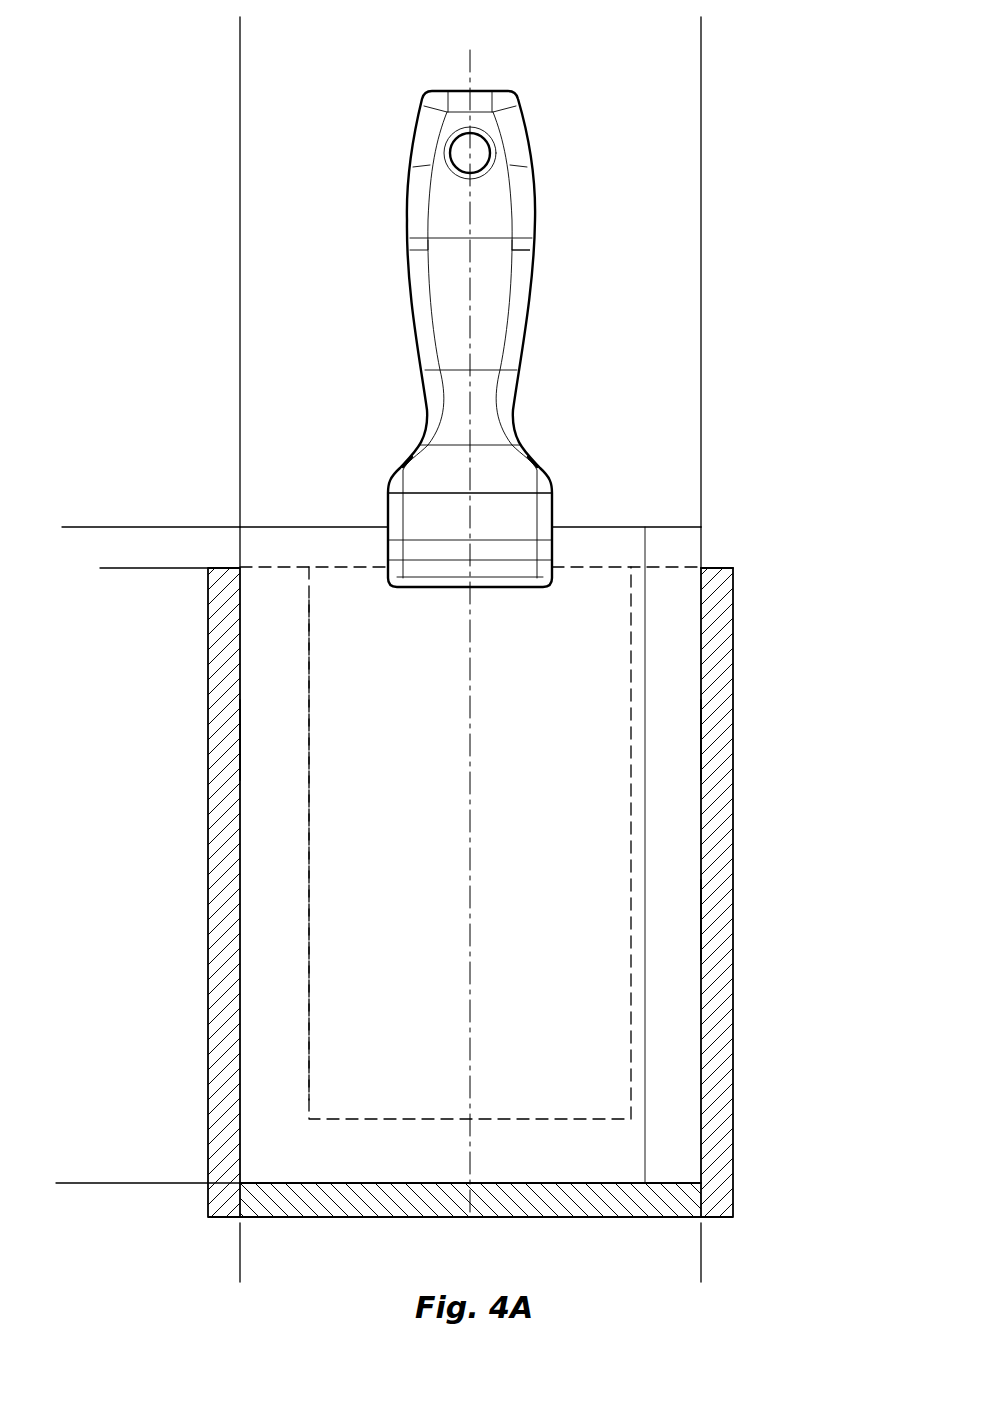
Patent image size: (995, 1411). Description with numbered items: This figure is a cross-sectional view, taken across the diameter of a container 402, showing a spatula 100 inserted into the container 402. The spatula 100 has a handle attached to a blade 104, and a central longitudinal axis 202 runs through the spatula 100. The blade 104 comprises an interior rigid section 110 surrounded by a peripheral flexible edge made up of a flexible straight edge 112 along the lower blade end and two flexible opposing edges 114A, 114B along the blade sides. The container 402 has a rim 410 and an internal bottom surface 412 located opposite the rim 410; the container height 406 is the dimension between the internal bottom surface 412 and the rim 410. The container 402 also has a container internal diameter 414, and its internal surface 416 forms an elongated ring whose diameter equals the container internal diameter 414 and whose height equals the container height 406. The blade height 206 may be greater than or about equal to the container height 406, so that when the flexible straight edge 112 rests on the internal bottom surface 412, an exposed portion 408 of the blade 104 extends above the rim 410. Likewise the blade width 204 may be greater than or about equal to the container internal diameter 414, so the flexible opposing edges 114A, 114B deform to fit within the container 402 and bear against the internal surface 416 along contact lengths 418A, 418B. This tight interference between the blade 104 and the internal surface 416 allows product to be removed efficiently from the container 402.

The spatula 100 is at (778, 160).
The blade 104 is at (603, 503).
The interior rigid section 110 is at (428, 861).
The flexible straight edge 112 is at (428, 1167).
The first flexible opposing edge 114A is at (692, 861).
The second flexible opposing edge 114B is at (305, 861).
The central longitudinal axis 202 is at (470, 77).
The blade width 204 is at (701, 31).
The blade height 206 is at (71, 527).
The container 402 is at (718, 1036).
The container height 406 is at (109, 568).
The exposed portion 408 is at (607, 556).
The rim 410 is at (723, 552).
The internal bottom surface 412 is at (672, 1170).
The container internal diameter 414 is at (701, 1271).
The internal surface 416 is at (680, 944).
The first contact length 418A is at (680, 768).
The second contact length 418B is at (262, 768).